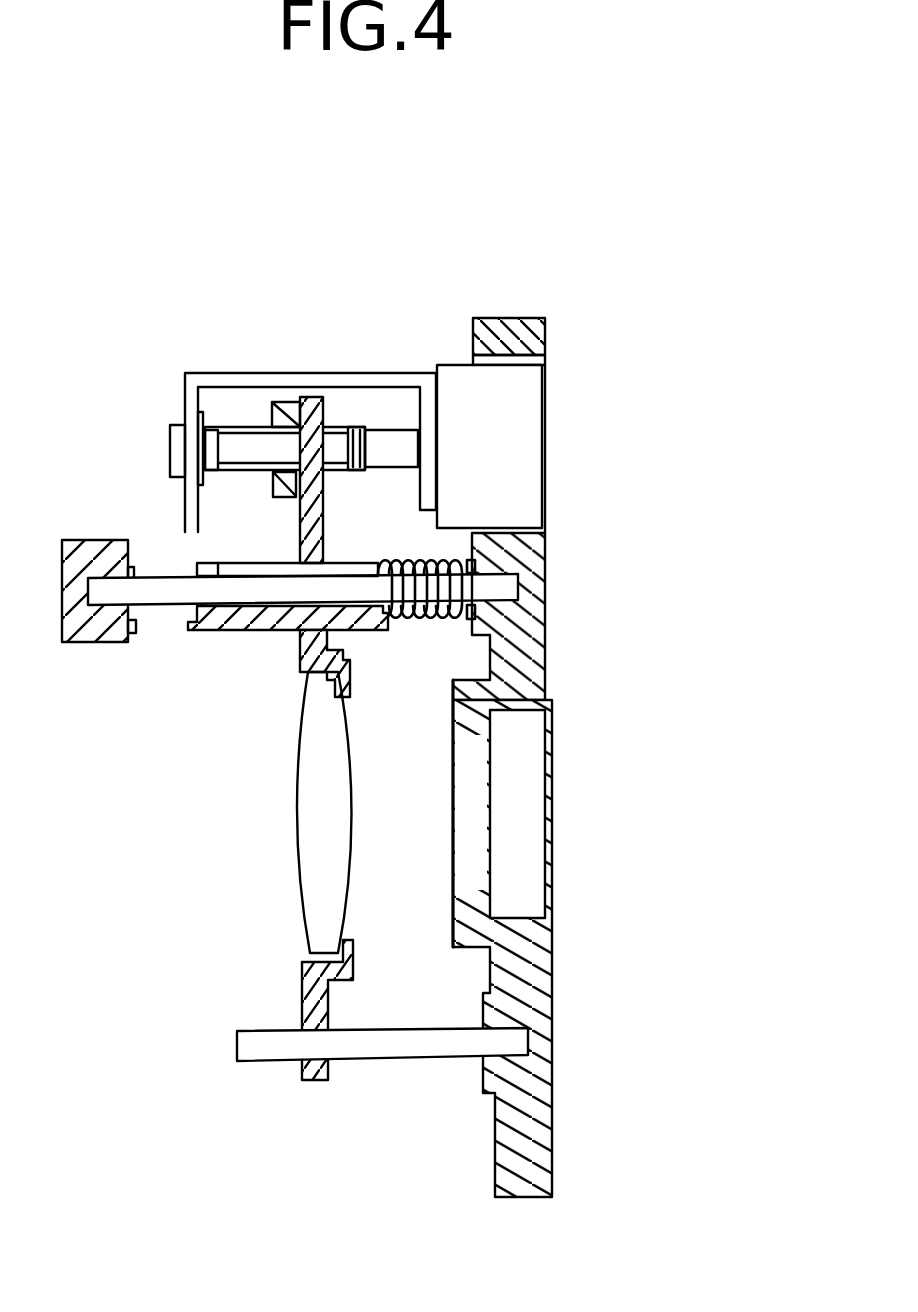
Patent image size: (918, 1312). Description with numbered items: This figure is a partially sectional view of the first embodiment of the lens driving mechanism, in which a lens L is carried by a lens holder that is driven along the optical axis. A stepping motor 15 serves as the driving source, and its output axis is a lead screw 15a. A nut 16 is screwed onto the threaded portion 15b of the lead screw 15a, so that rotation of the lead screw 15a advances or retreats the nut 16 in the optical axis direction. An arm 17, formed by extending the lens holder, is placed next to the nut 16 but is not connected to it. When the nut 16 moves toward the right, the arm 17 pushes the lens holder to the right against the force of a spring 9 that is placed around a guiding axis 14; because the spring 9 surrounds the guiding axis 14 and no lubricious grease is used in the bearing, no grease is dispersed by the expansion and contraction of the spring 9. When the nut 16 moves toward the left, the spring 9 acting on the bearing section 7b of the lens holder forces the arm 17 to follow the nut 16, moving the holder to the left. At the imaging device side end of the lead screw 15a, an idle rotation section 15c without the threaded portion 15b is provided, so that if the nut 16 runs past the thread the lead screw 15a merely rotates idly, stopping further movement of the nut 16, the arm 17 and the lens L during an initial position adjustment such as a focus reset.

The spring 9 is at (545, 550).
The stepping motor 15 is at (518, 403).
The nut 16 is at (278, 400).
The arm 17 is at (308, 397).
The lead screw 15a is at (343, 427).
The threaded portion 15b is at (228, 427).
The idle rotation section 15c is at (408, 428).
The guiding axis 14 is at (153, 573).
The bearing section 7b is at (220, 631).
The lens L is at (322, 868).